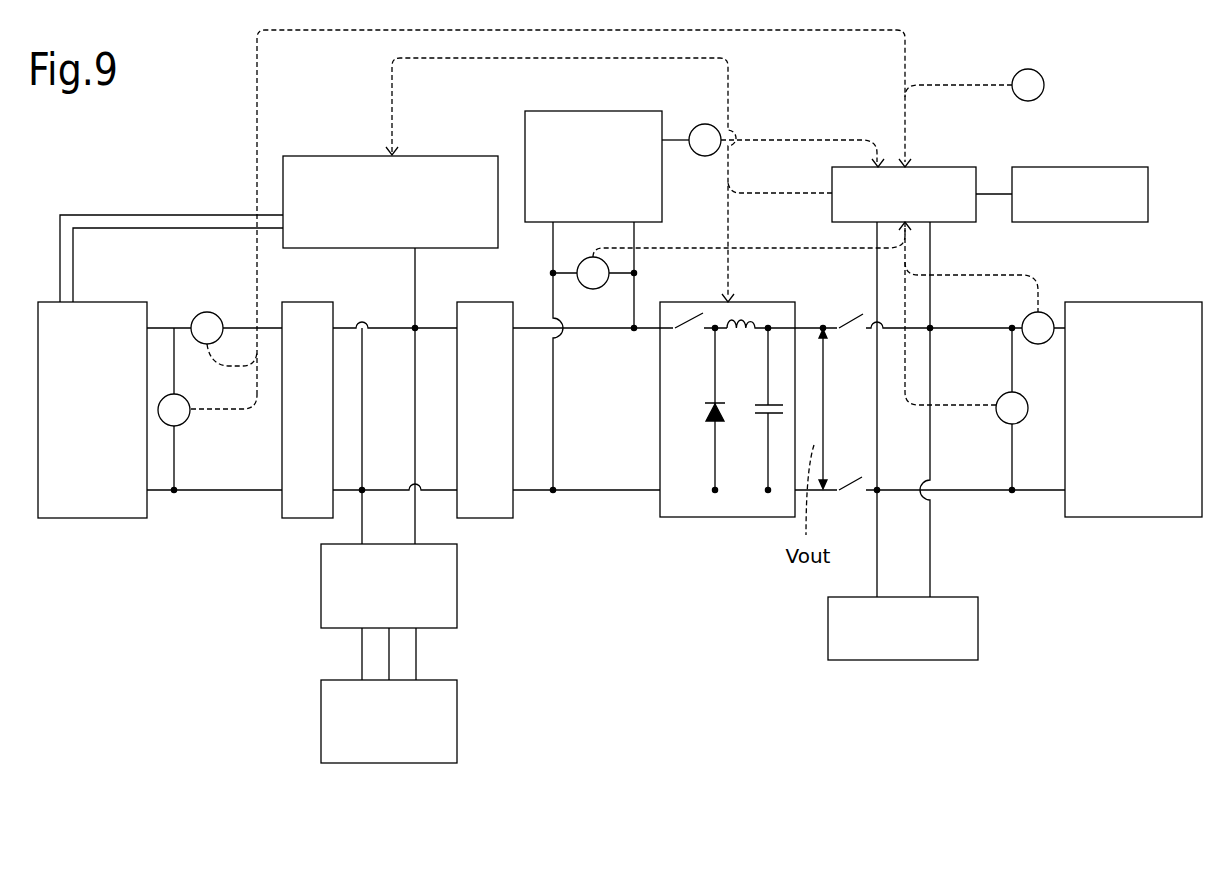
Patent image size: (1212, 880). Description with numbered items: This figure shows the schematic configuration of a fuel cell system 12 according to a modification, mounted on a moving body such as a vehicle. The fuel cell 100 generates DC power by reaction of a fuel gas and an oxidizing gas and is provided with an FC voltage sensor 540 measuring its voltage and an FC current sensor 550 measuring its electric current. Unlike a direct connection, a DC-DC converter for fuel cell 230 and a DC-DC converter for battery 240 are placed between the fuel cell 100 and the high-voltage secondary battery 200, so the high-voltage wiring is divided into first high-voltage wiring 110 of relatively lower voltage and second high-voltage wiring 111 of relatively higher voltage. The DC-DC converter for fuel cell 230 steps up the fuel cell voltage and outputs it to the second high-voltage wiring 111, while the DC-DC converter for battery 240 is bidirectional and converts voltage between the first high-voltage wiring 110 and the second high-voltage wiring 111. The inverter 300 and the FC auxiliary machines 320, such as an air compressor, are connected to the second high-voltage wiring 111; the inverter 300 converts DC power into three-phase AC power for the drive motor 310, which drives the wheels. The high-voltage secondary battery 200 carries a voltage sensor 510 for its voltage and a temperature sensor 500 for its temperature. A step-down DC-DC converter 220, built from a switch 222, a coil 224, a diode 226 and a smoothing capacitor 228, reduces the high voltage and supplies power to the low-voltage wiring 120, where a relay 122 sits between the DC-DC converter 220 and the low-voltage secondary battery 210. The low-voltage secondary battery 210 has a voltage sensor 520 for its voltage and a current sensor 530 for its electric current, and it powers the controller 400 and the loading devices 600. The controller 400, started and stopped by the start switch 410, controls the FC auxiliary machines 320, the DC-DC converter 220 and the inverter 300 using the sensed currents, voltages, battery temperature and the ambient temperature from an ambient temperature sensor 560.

The fuel cell system 12 is at (1128, 77).
The fuel cell 100 is at (128, 302).
The first high-voltage wiring 110 is at (590, 336).
The second high-voltage wiring 111 is at (380, 337).
The low-voltage wiring 120 is at (951, 337).
The relay 122 is at (848, 339).
The high-voltage secondary battery 200 is at (640, 111).
The low-voltage secondary battery 210 is at (1152, 302).
The DC-DC converter 220 is at (770, 302).
The switch 222 is at (689, 336).
The coil 224 is at (740, 336).
The diode 226 is at (708, 421).
The smoothing capacitor 228 is at (765, 415).
The DC-DC converter for fuel cell 230 is at (305, 302).
The DC-DC converter for battery 240 is at (480, 302).
The inverter 300 is at (457, 577).
The drive motor 310 is at (445, 680).
The FC auxiliary machines 320 is at (460, 156).
The controller 400 is at (940, 167).
The start switch 410 is at (1130, 167).
The temperature sensor 500 is at (714, 124).
The voltage sensor 510 is at (580, 261).
The voltage sensor 520 is at (1015, 425).
The current sensor 530 is at (1050, 312).
The FC voltage sensor 540 is at (186, 425).
The FC current sensor 550 is at (200, 300).
The ambient temperature sensor 560 is at (1040, 70).
The loading devices 600 is at (958, 597).